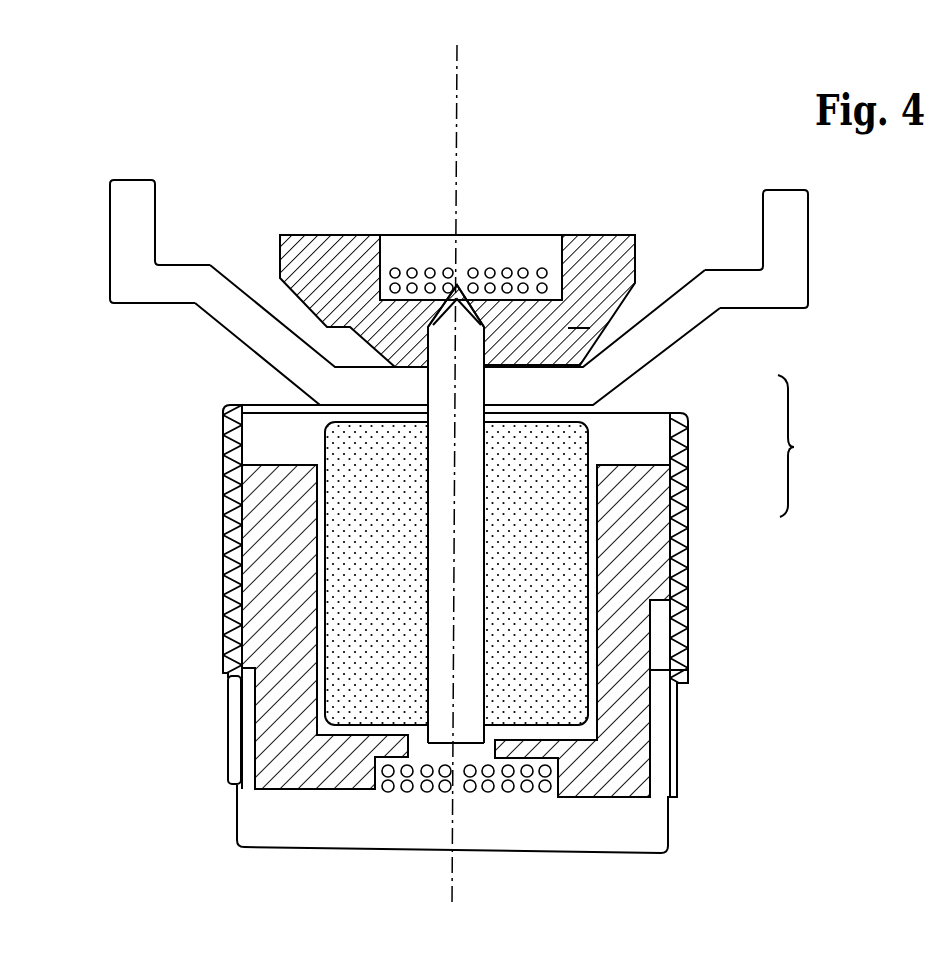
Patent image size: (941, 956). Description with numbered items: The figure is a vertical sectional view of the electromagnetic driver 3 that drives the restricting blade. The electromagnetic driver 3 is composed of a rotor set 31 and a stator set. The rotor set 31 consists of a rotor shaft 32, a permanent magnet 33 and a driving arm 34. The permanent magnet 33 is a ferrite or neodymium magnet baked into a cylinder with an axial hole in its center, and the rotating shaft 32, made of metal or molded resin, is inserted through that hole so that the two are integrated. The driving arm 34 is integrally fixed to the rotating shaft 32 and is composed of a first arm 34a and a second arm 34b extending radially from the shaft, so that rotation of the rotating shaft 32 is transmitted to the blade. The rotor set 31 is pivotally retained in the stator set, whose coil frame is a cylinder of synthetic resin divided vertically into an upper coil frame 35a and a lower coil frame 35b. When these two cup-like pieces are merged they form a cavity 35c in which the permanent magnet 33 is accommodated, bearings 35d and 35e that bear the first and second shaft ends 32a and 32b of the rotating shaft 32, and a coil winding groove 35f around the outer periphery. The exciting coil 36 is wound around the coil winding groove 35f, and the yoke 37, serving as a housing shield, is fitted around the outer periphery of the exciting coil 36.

The electromagnetic driver 3 is at (677, 150).
The rotor set 31 is at (801, 446).
The rotor shaft 32 is at (470, 532).
The first shaft end 32a is at (457, 285).
The second shaft end 32b is at (427, 747).
The permanent magnet 33 is at (570, 473).
The driving arm 34 is at (650, 335).
The first arm 34a is at (803, 222).
The second arm 34b is at (123, 212).
The upper coil frame 35a is at (347, 234).
The lower coil frame 35b is at (655, 672).
The cavity 35c is at (310, 715).
The bearing 35d is at (461, 287).
The bearing 35e is at (463, 787).
The coil winding groove 35f is at (546, 262).
The exciting coil 36 is at (412, 272).
The yoke 37 is at (670, 592).